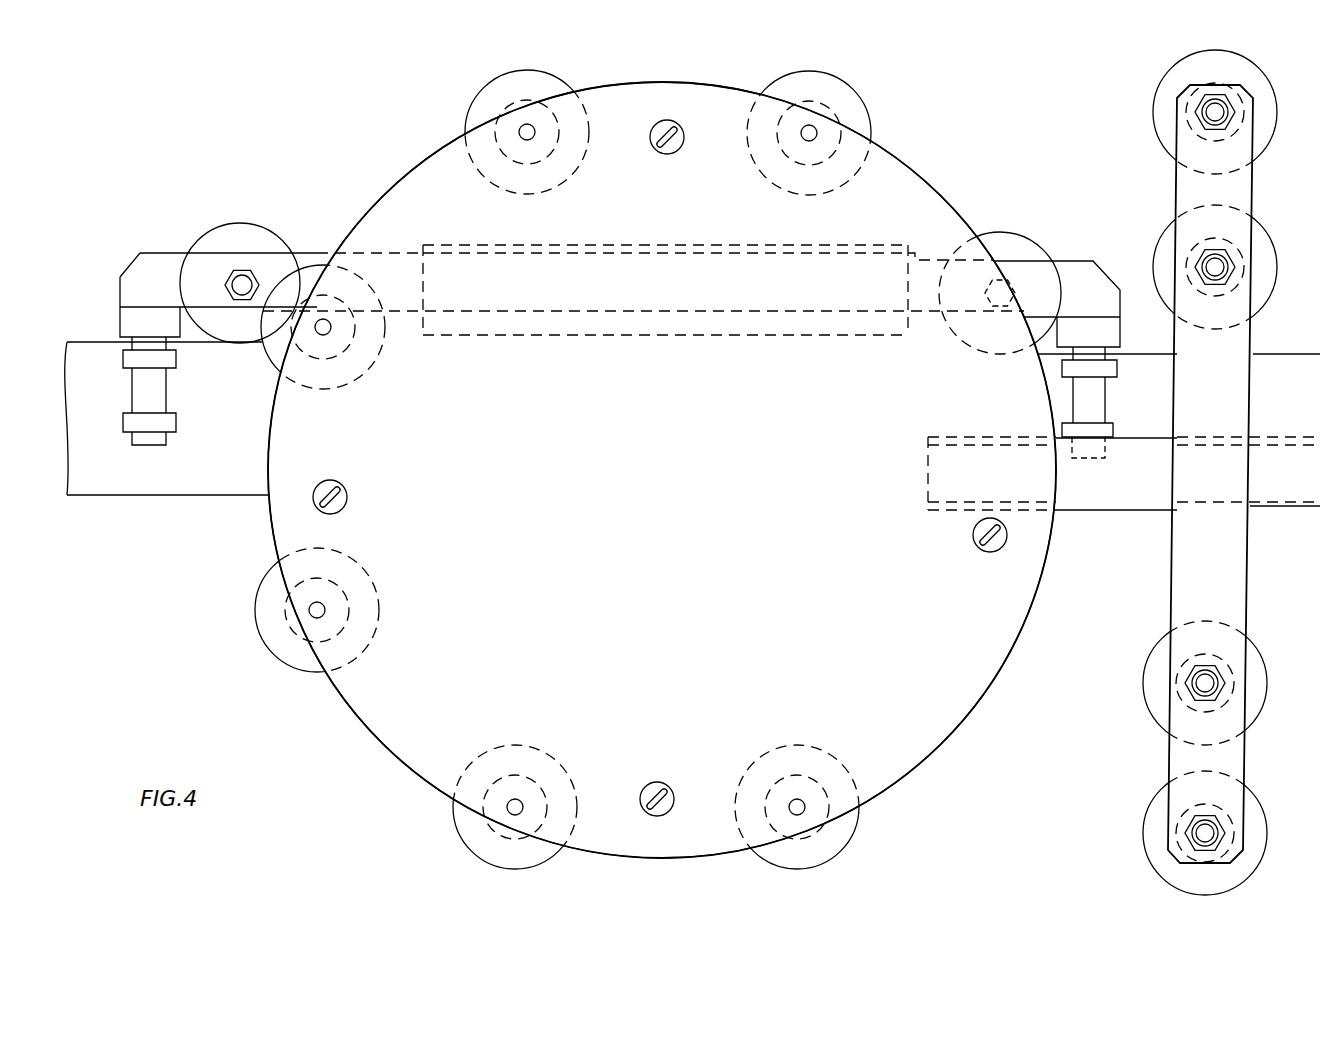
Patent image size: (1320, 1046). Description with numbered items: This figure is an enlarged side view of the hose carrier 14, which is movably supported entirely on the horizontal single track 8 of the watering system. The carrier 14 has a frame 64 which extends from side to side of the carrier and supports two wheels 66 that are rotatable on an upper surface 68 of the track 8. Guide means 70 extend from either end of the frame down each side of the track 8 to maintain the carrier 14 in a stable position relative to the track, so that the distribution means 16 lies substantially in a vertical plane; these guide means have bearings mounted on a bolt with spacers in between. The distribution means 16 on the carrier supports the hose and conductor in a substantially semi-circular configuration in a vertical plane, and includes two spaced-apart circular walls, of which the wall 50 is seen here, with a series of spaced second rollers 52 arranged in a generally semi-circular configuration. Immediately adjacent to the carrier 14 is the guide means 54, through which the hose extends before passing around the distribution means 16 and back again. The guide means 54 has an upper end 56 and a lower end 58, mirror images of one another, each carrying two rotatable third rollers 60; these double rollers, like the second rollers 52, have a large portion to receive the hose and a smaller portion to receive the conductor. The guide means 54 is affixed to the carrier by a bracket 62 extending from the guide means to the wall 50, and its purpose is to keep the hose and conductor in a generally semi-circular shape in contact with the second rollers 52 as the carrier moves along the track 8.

The track 8 is at (215, 478).
The hose carrier 14 is at (150, 245).
The distribution means 16 is at (937, 192).
The circular wall 50 is at (374, 207).
The second rollers 52 is at (306, 253).
The guide means 54 is at (1240, 533).
The upper end 56 is at (1193, 195).
The lower end 58 is at (1172, 770).
The third rollers 60 is at (1263, 250).
The bracket 62 is at (1083, 508).
The frame 64 is at (1065, 260).
The wheels 66 is at (232, 226).
The upper surface 68 is at (1278, 354).
The guide means 70 is at (137, 445).